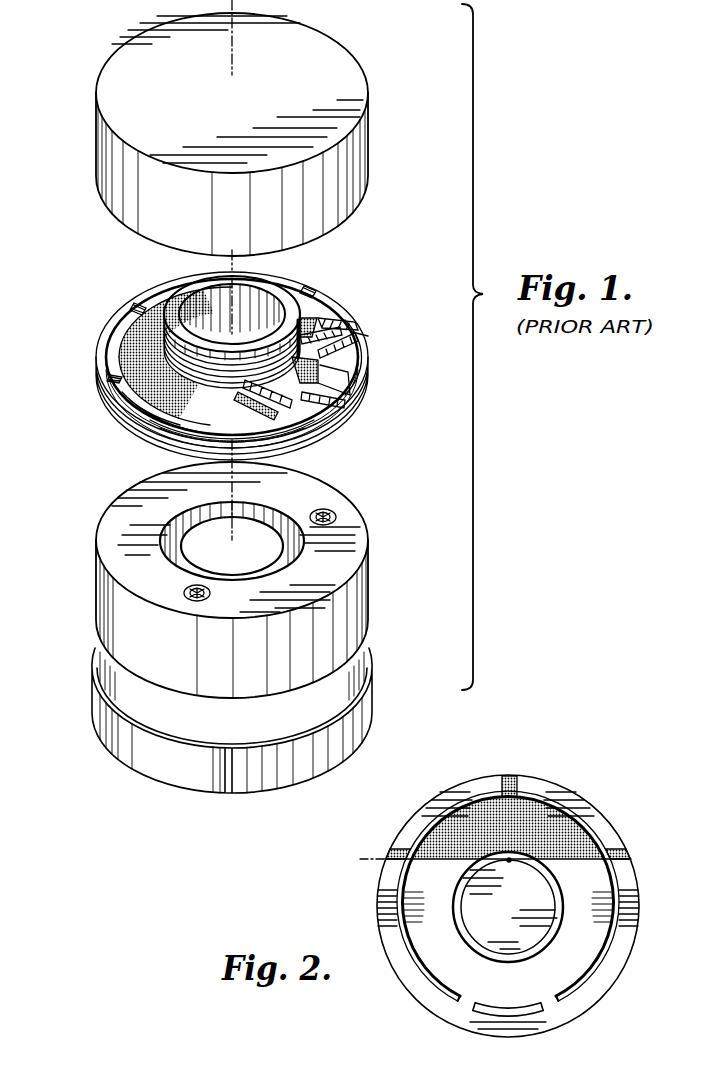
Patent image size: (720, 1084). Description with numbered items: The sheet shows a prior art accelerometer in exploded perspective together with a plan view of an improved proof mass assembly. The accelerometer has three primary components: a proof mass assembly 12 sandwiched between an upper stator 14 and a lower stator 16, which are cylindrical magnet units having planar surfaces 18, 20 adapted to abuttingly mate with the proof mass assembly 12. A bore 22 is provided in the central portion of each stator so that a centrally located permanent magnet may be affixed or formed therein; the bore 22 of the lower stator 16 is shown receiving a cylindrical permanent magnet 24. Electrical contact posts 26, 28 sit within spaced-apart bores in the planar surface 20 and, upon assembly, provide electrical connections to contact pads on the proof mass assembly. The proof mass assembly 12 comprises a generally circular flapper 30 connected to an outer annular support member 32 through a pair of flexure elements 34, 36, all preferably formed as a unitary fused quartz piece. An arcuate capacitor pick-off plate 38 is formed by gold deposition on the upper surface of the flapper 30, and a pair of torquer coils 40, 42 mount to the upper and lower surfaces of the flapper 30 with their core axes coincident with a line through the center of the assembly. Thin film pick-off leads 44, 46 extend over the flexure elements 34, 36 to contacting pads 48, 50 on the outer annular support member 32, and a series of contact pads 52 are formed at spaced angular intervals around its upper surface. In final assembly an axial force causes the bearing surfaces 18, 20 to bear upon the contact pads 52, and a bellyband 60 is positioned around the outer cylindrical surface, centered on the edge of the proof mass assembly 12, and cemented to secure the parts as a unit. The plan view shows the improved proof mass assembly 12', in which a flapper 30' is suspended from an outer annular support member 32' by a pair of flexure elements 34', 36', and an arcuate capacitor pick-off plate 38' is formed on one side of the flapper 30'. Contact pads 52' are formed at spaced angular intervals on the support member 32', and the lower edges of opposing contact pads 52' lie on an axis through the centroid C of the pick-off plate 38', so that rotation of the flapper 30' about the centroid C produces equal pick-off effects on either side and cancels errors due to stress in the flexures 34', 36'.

In FIG. 1, the proof mass assembly 12 is at (256, 362).
In FIG. 1, the upper stator 14 is at (370, 120).
In FIG. 1, the lower stator 16 is at (362, 598).
In FIG. 1, the planar surface 18 is at (360, 216).
In FIG. 1, the planar surface 20 is at (355, 558).
In FIG. 1, the bore 22 is at (162, 536).
In FIG. 1, the permanent magnet 24 is at (257, 537).
In FIG. 1, the electrical contact post 26 is at (335, 516).
In FIG. 1, the electrical contact post 28 is at (183, 592).
In FIG. 1, the flapper 30 is at (131, 356).
In FIG. 1, the outer annular support member 32 is at (200, 363).
In FIG. 1, the flexure element 34 is at (210, 394).
In FIG. 1, the flexure element 36 is at (367, 328).
In FIG. 1, the arcuate capacitor pick-off plate 38 is at (181, 354).
In FIG. 1, the torquer coil 40 is at (270, 283).
In FIG. 1, the torquer coil 42 is at (272, 433).
In FIG. 1, the thin film pick-off lead 44 is at (328, 404).
In FIG. 1, the thin film pick-off lead 46 is at (348, 388).
In FIG. 1, the contacting pad 48 is at (300, 418).
In FIG. 1, the contacting pad 50 is at (358, 368).
In FIG. 1, the contact pads 52 is at (210, 345).
In FIG. 1, the bellyband 60 is at (160, 788).
In FIG. 2, the proof mass assembly 12' is at (533, 906).
In FIG. 2, the flapper 30' is at (525, 891).
In FIG. 2, the outer annular support member 32' is at (508, 876).
In FIG. 2, the flexure element 34' is at (490, 1031).
In FIG. 2, the flexure element 36' is at (570, 1023).
In FIG. 2, the arcuate capacitor pick-off plate 38' is at (508, 802).
In FIG. 2, the contact pads 52' is at (522, 794).
In FIG. 2, the centroid C is at (509, 862).